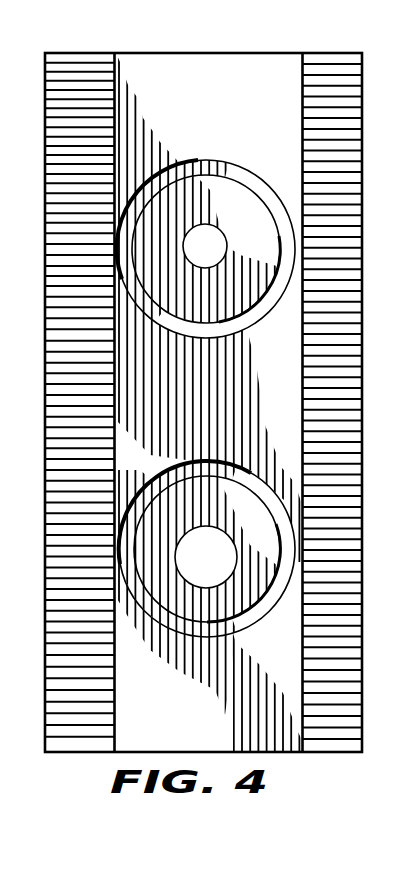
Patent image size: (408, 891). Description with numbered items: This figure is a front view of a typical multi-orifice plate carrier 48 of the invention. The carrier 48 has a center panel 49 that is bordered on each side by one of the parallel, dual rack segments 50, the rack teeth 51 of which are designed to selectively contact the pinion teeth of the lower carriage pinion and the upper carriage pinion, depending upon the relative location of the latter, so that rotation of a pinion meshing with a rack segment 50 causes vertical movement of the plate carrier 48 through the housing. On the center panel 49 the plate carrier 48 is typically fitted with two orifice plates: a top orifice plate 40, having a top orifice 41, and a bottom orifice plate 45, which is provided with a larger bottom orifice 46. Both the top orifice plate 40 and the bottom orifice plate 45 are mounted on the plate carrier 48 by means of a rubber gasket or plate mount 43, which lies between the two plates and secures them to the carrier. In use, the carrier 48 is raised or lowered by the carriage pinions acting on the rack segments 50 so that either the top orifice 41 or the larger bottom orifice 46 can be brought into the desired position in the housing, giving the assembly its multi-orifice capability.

The top orifice plate 40 is at (230, 176).
The top orifice 41 is at (186, 245).
The plate mount 43 is at (207, 340).
The bottom orifice plate 45 is at (241, 488).
The bottom orifice 46 is at (178, 557).
The plate carrier 48 is at (221, 46).
The center panel 49 is at (222, 113).
The rack segments 50 is at (74, 72).
The rack teeth 51 is at (102, 73).